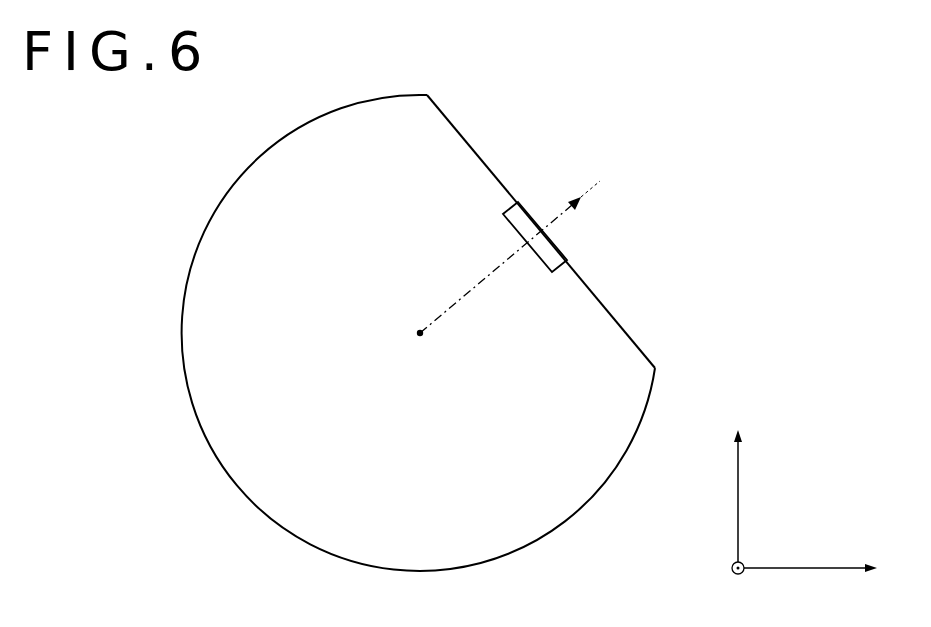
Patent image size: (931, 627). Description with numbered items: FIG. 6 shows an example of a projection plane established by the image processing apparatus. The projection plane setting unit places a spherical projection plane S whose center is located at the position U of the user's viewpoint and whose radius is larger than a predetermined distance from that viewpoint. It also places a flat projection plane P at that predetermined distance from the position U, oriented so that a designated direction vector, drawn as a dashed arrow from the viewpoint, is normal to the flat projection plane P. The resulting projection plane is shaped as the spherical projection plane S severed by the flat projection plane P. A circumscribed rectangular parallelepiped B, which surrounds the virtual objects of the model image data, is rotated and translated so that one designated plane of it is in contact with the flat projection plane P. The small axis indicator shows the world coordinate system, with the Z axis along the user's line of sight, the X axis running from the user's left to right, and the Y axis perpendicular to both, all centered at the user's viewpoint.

The spherical projection plane S is at (207, 440).
The flat projection plane P is at (611, 293).
The circumscribed rectangular parallelepiped B is at (505, 213).
The position of the user's viewpoint U is at (412, 351).
The X-axis X is at (728, 583).
The Y-axis Y is at (820, 570).
The Z-axis Z is at (738, 482).